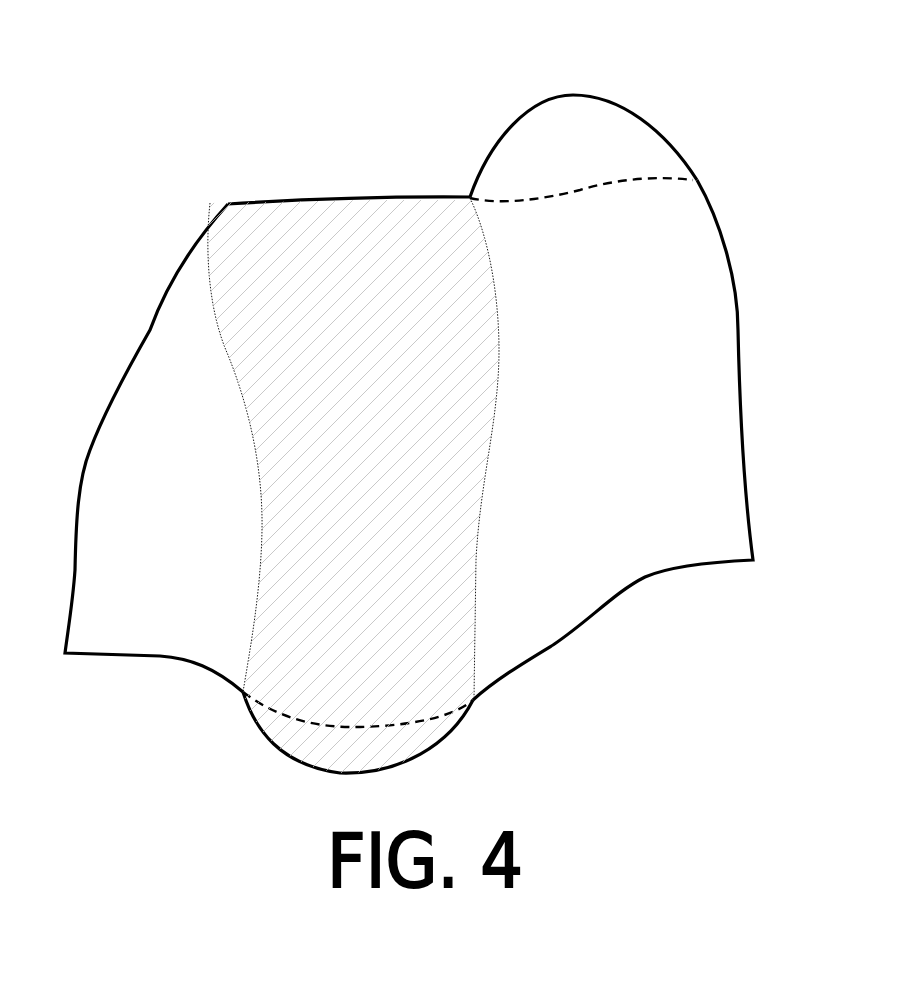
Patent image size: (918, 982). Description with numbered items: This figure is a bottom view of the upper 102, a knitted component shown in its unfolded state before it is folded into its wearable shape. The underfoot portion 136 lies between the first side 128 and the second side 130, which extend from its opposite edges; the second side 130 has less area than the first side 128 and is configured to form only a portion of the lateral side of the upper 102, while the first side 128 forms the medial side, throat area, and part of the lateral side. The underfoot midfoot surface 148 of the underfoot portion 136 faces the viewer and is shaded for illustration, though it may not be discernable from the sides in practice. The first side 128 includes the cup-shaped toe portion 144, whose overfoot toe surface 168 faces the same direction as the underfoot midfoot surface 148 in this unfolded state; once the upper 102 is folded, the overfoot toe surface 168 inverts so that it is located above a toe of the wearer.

The upper 102 is at (182, 156).
The first side 128 is at (589, 424).
The second side 130 is at (134, 525).
The underfoot portion 136 is at (350, 469).
The toe portion 144 is at (537, 145).
The underfoot midfoot surface 148 is at (315, 258).
The overfoot toe surface 168 is at (598, 128).